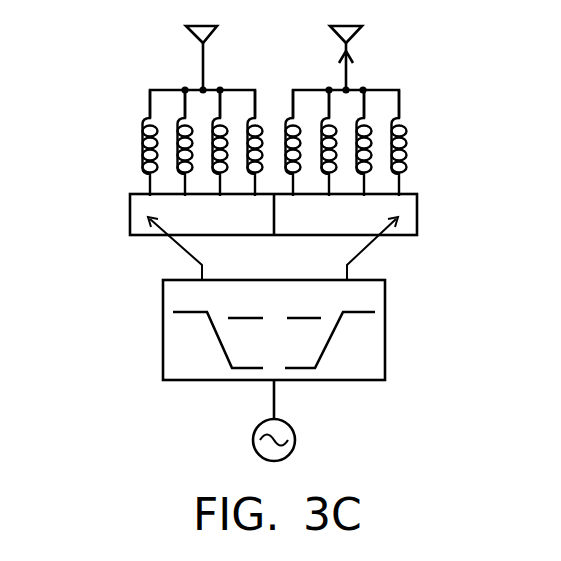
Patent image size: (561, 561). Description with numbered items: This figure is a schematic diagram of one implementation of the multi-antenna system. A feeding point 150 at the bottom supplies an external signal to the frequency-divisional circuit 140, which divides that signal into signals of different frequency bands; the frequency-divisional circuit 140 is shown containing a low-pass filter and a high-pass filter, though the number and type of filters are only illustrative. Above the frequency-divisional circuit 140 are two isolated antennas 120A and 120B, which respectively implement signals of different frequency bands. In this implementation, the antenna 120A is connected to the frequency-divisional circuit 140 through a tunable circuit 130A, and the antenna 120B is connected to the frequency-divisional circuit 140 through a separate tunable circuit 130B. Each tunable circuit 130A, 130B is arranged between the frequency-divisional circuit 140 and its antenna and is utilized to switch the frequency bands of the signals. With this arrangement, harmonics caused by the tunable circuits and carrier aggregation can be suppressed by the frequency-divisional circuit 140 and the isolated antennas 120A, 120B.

The antenna 120A is at (362, 37).
The antenna 120B is at (192, 37).
The tunable circuit 130A is at (407, 154).
The tunable circuit 130B is at (139, 150).
The frequency-divisional circuit 140 is at (386, 330).
The feeding point 150 is at (296, 440).